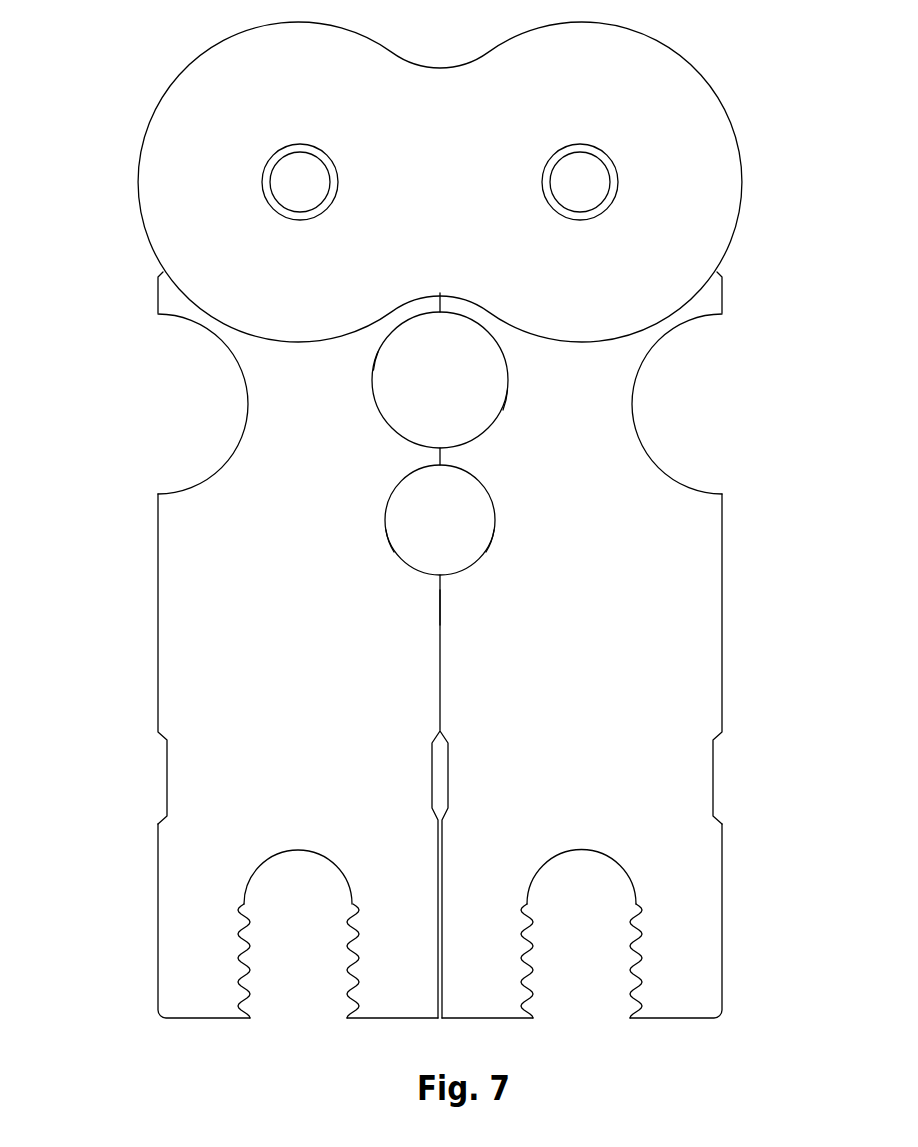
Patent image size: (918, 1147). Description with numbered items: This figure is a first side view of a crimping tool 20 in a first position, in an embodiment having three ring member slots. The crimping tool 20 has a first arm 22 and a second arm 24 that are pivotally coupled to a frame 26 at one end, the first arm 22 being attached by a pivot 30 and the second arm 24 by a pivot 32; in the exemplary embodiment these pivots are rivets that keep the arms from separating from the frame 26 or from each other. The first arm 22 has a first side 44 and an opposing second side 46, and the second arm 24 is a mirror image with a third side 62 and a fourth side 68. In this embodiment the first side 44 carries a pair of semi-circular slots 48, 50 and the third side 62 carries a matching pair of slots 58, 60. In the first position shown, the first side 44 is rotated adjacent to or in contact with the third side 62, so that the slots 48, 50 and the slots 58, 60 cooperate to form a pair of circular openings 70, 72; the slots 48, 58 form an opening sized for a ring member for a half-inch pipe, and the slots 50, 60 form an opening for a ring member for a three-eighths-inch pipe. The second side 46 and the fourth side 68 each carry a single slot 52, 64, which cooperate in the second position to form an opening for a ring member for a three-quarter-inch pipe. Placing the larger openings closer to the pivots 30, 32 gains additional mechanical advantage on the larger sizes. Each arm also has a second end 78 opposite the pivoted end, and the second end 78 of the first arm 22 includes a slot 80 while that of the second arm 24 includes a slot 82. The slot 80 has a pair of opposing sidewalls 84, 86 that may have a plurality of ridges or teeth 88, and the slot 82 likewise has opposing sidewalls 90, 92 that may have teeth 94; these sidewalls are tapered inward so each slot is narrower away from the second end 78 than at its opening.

The crimping tool 20 is at (114, 77).
The first arm 22 is at (158, 845).
The second arm 24 is at (722, 830).
The frame 26 is at (440, 182).
The pivot 30 is at (288, 217).
The pivot 32 is at (572, 143).
The first side 44 is at (440, 688).
The second side 46 is at (157, 625).
The slot 48 is at (379, 360).
The slot 50 is at (398, 547).
The slot 52 is at (232, 352).
The slot 58 is at (503, 398).
The slot 60 is at (485, 556).
The third side 62 is at (440, 600).
The slot 64 is at (683, 322).
The fourth side 68 is at (722, 596).
The circular opening 70 is at (440, 370).
The circular opening 72 is at (440, 511).
The second end 78 is at (208, 1020).
The slot 80 is at (298, 973).
The slot 82 is at (585, 967).
The sidewall 84 is at (246, 975).
The sidewall 86 is at (342, 961).
The teeth 88 is at (247, 927).
The sidewall 90 is at (520, 965).
The sidewall 92 is at (635, 948).
The teeth 94 is at (530, 938).